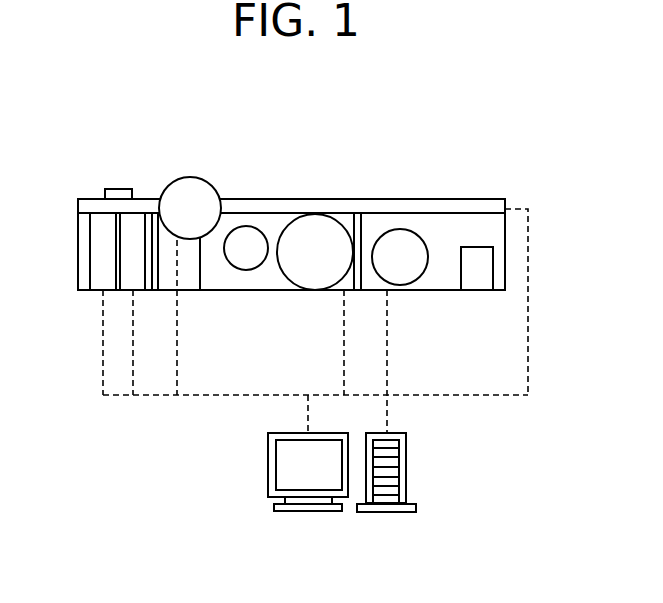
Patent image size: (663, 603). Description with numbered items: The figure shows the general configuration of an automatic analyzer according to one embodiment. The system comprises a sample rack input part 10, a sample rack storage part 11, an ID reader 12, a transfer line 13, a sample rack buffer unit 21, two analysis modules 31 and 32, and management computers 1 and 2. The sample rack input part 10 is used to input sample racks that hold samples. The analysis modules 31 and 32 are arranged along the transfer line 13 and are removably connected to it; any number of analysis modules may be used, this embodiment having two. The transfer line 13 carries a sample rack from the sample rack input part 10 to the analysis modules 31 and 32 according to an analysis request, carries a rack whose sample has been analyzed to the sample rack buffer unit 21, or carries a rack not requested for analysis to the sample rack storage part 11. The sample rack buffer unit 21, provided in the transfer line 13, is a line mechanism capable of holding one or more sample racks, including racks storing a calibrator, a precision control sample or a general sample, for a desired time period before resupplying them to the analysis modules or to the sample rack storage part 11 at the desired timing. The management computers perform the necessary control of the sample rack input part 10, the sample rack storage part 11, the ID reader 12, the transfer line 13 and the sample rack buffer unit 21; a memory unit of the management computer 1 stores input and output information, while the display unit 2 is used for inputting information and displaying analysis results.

The management computer 1 is at (385, 513).
The display unit 2 is at (305, 513).
The sample rack input part 10 is at (100, 290).
The sample rack storage part 11 is at (132, 290).
The ID reader 12 is at (118, 189).
The transfer line 13 is at (281, 198).
The sample rack buffer unit 21 is at (193, 176).
The analysis module 31 is at (280, 292).
The analysis module 32 is at (425, 292).